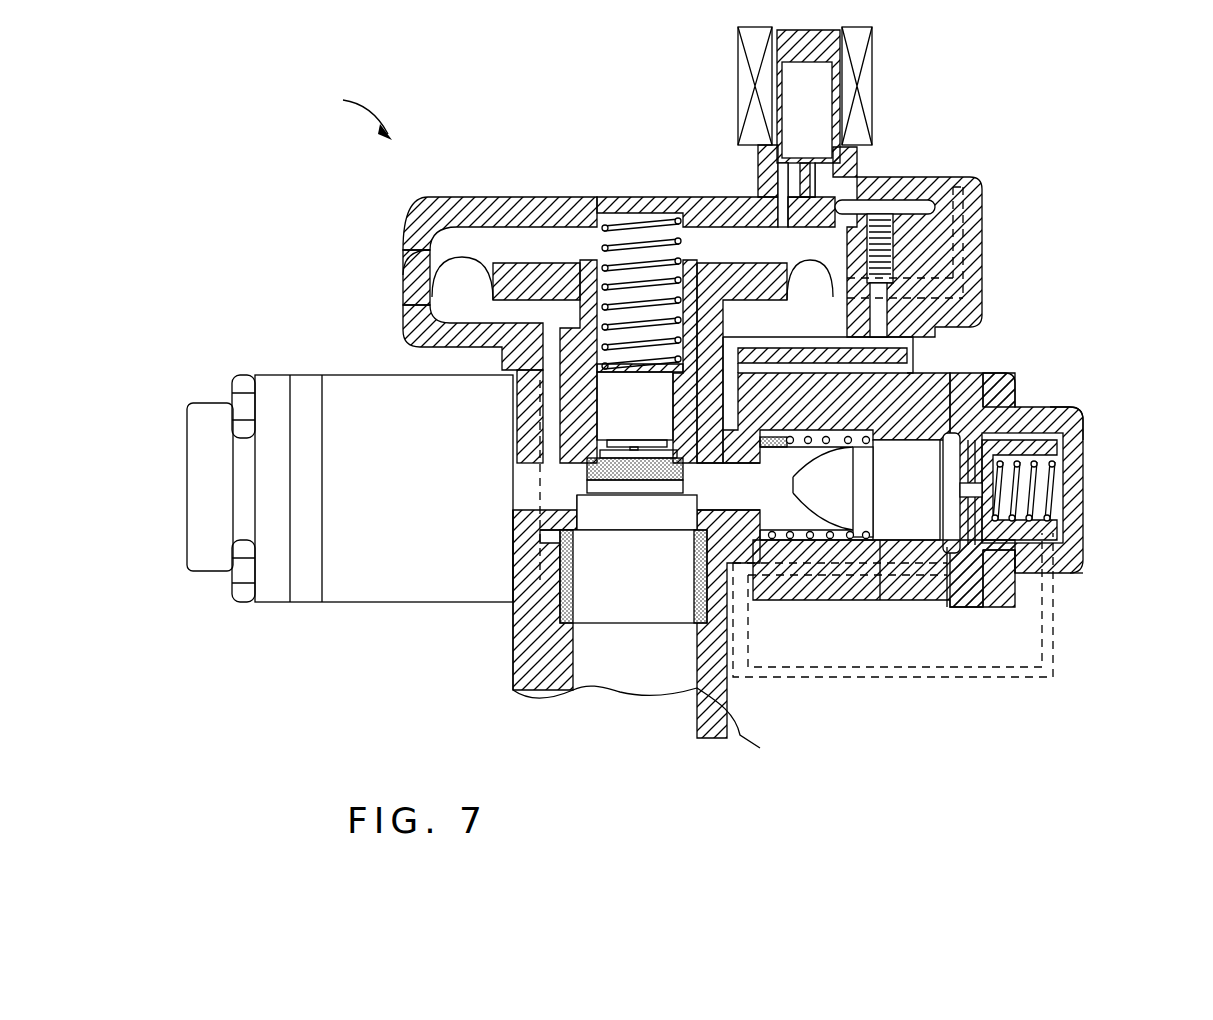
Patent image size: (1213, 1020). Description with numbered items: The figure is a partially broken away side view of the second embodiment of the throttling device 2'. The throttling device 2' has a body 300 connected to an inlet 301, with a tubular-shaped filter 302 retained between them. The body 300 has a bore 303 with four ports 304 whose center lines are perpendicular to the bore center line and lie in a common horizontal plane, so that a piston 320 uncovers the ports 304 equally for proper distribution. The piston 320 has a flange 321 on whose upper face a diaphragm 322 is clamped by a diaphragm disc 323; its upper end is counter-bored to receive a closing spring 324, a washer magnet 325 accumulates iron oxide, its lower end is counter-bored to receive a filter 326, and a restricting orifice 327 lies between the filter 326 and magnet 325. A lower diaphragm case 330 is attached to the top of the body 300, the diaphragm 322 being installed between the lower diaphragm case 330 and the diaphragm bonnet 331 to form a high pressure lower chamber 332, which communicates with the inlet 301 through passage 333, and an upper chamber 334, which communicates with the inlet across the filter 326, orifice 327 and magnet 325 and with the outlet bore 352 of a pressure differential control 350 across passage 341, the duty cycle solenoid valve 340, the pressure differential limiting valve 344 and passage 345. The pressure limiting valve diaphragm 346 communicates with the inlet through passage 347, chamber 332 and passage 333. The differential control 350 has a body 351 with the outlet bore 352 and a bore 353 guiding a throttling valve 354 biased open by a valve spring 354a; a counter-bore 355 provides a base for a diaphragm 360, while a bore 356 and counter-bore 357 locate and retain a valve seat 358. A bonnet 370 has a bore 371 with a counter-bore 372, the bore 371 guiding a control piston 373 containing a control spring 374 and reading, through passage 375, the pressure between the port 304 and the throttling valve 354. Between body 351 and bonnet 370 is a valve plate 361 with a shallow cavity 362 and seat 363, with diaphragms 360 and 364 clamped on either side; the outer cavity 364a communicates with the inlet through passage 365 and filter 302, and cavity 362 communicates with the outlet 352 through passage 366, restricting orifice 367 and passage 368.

The throttling device 2' is at (352, 114).
The body 300 is at (513, 592).
The inlet 301 is at (535, 690).
The filter 302 is at (513, 645).
The bore 303 is at (578, 520).
The ports 304 is at (625, 500).
The piston 320 is at (674, 497).
The flange 321 is at (785, 299).
The diaphragm 322 is at (468, 262).
The diaphragm disc 323 is at (712, 270).
The closing spring 324 is at (640, 225).
The washer magnet 325 is at (612, 440).
The filter 326 is at (590, 468).
The restricting orifice 327 is at (635, 406).
The lower diaphragm case 330 is at (404, 342).
The diaphragm bonnet 331 is at (405, 243).
The lower chamber 332 is at (440, 298).
The passage 333 is at (545, 425).
The upper chamber 334 is at (557, 235).
The duty cycle solenoid valve 340 is at (815, 115).
The passage 341 is at (760, 207).
The pressure differential limiting valve 344 is at (905, 325).
The passage 345 is at (912, 342).
The pressure limiting valve diaphragm 346 is at (930, 200).
The passage 347 is at (958, 222).
The pressure differential control 350 is at (152, 535).
The body 351 is at (358, 600).
The outlet bore 352 is at (843, 602).
The bore 353 is at (893, 537).
The throttling valve 354 is at (925, 470).
The valve spring 354a is at (810, 542).
The counter-bore 355 is at (940, 472).
The bore 356 is at (758, 535).
The counter-bore 357 is at (768, 545).
The valve seat 358 is at (775, 540).
The diaphragm 360 is at (920, 598).
The valve plate 361 is at (970, 603).
The shallow cavity 362 is at (953, 510).
The seat 363 is at (962, 522).
The diaphragm 364 is at (1080, 414).
The outer cavity 364a is at (985, 440).
The passage 365 is at (960, 598).
The passage 366 is at (1005, 398).
The restricting orifice 367 is at (967, 380).
The passage 368 is at (868, 422).
The bonnet 370 is at (1070, 406).
The bore 371 is at (1057, 567).
The counter-bore 372 is at (1010, 557).
The control piston 373 is at (1045, 450).
The control spring 374 is at (1058, 492).
The passage 375 is at (955, 675).